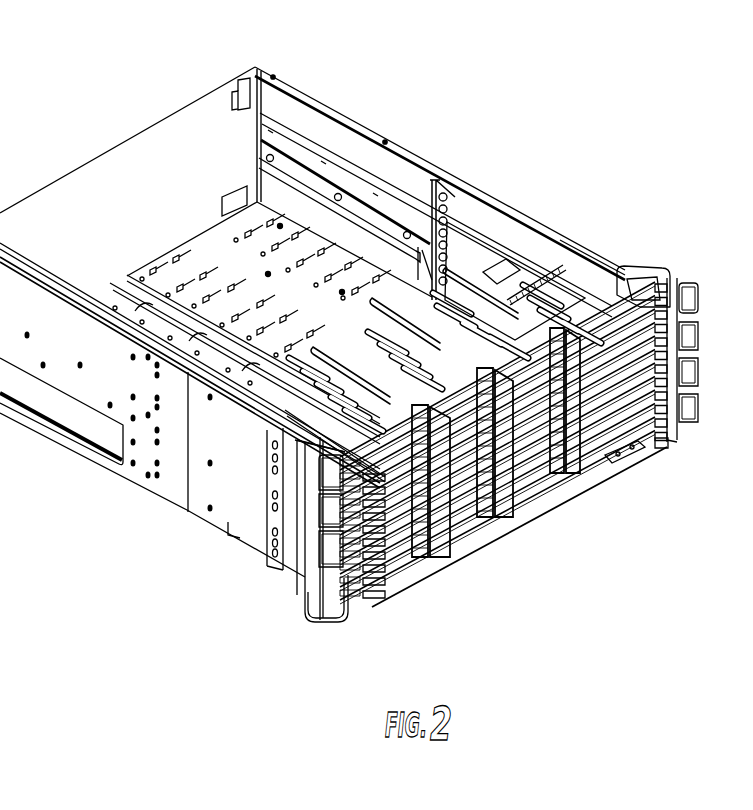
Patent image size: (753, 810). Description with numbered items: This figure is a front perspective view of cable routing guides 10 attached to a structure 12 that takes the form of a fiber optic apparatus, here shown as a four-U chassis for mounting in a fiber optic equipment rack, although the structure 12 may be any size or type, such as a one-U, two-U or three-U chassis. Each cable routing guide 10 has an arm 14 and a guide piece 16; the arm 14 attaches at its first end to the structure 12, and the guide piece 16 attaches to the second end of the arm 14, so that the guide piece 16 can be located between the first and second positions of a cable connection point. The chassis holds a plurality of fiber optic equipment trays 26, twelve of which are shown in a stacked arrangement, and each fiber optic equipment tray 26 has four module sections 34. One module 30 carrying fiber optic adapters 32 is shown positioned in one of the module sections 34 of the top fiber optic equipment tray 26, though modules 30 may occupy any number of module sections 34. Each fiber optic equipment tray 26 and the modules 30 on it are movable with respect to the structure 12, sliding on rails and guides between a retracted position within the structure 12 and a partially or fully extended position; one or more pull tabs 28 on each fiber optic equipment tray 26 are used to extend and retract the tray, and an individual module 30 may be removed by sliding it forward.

The cable routing guide 10 is at (662, 255).
The structure 12 is at (348, 82).
The arm 14 is at (652, 265).
The guide piece 16 is at (688, 281).
The fiber optic equipment tray 26 is at (441, 270).
The pull tab 28 is at (664, 441).
The module 30 is at (553, 266).
The fiber optic adapter 32 is at (583, 263).
The module section 34 is at (667, 448).